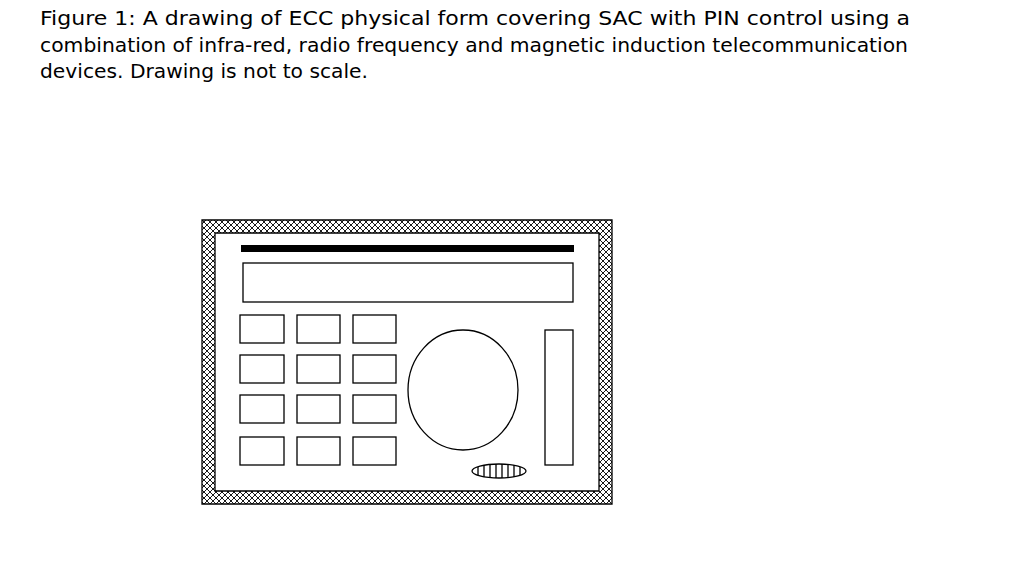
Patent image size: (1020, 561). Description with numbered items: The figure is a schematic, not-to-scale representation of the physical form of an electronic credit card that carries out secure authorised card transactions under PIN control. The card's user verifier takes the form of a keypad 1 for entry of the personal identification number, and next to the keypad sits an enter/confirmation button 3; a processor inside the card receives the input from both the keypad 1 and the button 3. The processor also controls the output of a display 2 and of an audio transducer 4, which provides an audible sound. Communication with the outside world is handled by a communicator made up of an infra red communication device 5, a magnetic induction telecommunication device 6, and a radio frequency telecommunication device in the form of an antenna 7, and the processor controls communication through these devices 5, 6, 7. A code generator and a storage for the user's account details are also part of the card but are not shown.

The keypad 1 is at (239, 431).
The display 2 is at (575, 287).
The enter/confirmation button 3 is at (494, 328).
The audio transducer 4 is at (529, 474).
The infra red communication device 5 is at (576, 398).
The magnetic induction telecommunication device 6 is at (575, 222).
The antenna 7 is at (297, 246).